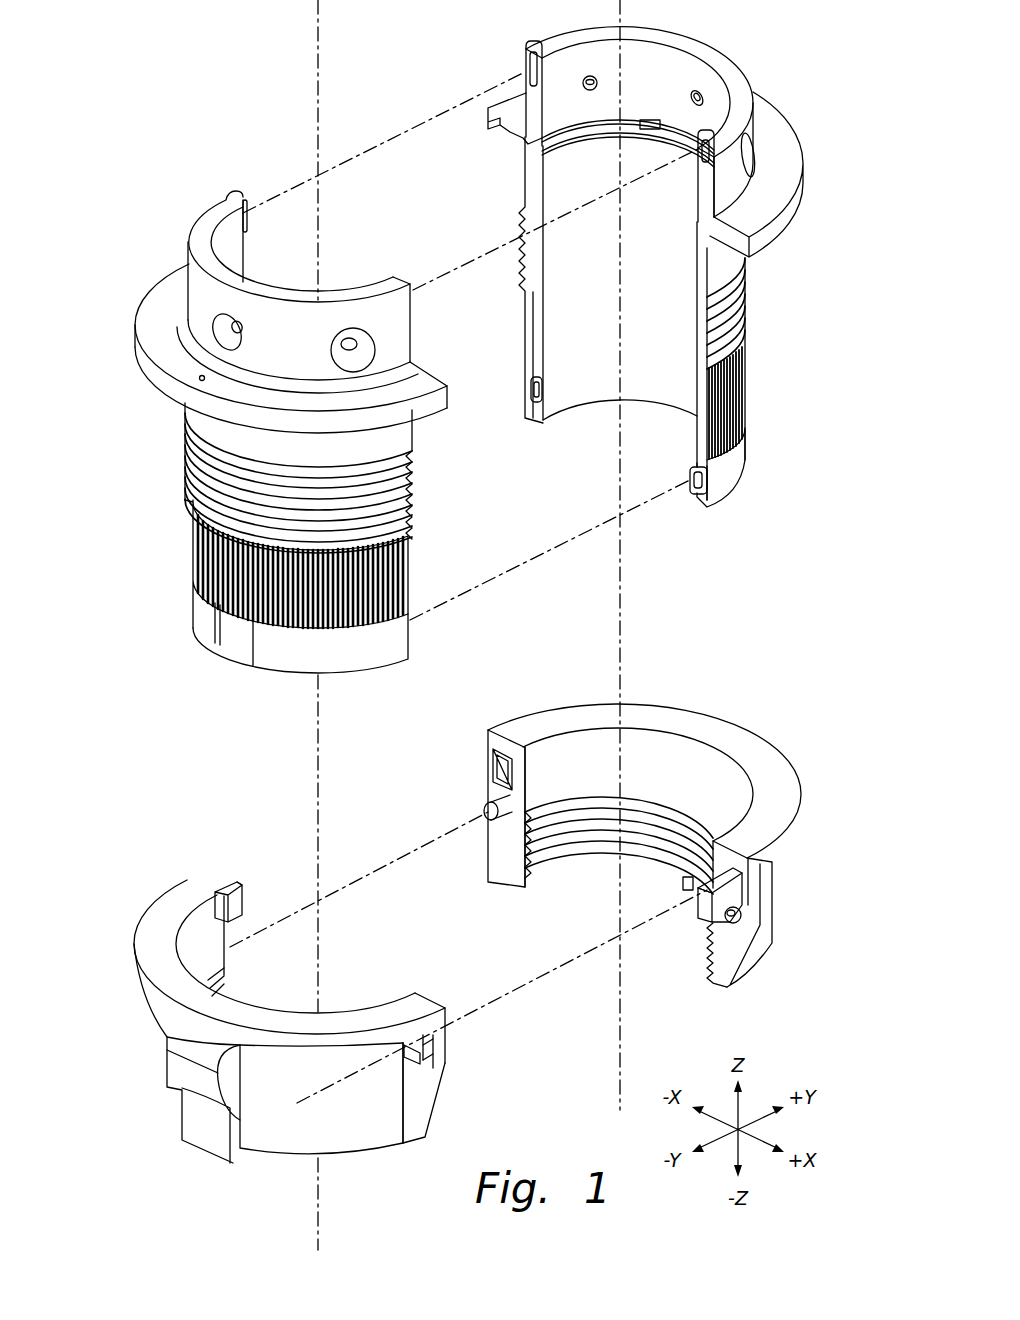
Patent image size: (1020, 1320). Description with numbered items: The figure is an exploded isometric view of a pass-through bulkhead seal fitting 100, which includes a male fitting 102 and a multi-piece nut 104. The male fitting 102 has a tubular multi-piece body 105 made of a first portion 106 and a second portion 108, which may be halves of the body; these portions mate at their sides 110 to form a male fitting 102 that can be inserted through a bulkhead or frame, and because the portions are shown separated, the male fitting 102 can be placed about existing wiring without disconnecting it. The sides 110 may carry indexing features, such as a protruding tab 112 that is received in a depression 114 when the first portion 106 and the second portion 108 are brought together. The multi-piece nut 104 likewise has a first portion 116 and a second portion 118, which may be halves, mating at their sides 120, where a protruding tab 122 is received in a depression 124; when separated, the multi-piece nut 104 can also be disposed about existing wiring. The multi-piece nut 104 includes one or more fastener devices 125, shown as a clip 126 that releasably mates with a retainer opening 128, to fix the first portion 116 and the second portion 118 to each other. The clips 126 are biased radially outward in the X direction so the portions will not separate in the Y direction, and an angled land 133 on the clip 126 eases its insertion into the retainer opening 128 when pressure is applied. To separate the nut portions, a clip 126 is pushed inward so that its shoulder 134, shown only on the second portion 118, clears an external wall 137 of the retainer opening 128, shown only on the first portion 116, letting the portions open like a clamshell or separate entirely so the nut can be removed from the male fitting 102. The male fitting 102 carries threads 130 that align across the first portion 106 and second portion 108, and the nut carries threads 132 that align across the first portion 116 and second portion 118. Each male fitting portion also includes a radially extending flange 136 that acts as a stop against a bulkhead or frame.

The pass-through bulkhead seal fitting 100 is at (734, 22).
The male fitting 102 is at (82, 690).
The multi-piece nut 104 is at (82, 692).
The tubular multi-piece body 105 is at (742, 540).
The first portion 106 is at (280, 672).
The second portion 108 is at (728, 493).
The sides 110 is at (245, 266).
The protruding tab 112 is at (243, 203).
The depression 114 is at (526, 66).
The first portion 116 is at (173, 1037).
The second portion 118 is at (773, 920).
The sides 120 is at (513, 853).
The protruding tab 122 is at (490, 822).
The depression 124 is at (738, 922).
The fastener device 125 is at (468, 741).
The clip 126 is at (722, 898).
The retainer opening 128 is at (493, 764).
The threads 130 is at (205, 473).
The threads 132 is at (230, 980).
The angled land 133 is at (222, 884).
The shoulder 134 is at (735, 872).
The radially extending flange 136 is at (170, 283).
The external wall 137 is at (443, 1082).